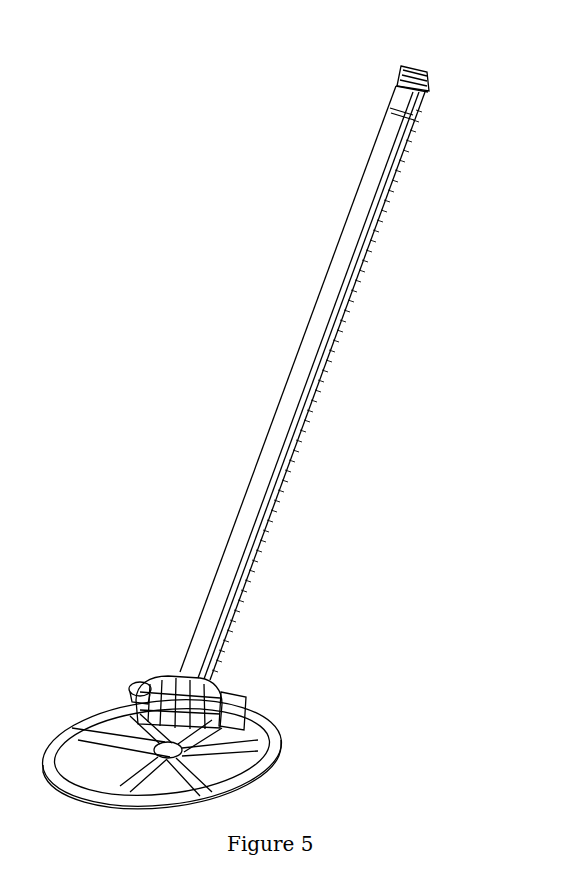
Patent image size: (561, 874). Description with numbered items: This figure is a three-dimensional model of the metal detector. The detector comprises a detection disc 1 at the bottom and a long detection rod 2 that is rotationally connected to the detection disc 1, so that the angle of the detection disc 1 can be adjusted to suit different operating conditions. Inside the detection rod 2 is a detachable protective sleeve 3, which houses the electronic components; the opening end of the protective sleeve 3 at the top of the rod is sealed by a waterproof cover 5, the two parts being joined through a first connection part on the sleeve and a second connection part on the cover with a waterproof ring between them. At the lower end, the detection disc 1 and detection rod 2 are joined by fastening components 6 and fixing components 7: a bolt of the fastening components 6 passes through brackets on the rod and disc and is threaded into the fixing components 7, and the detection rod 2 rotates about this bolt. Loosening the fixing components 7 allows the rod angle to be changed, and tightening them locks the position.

The detection disc 1 is at (238, 719).
The detection rod 2 is at (274, 383).
The protective sleeve 3 is at (380, 80).
The waterproof cover 5 is at (447, 52).
The fastening components 6 is at (167, 646).
The fixing components 7 is at (119, 664).